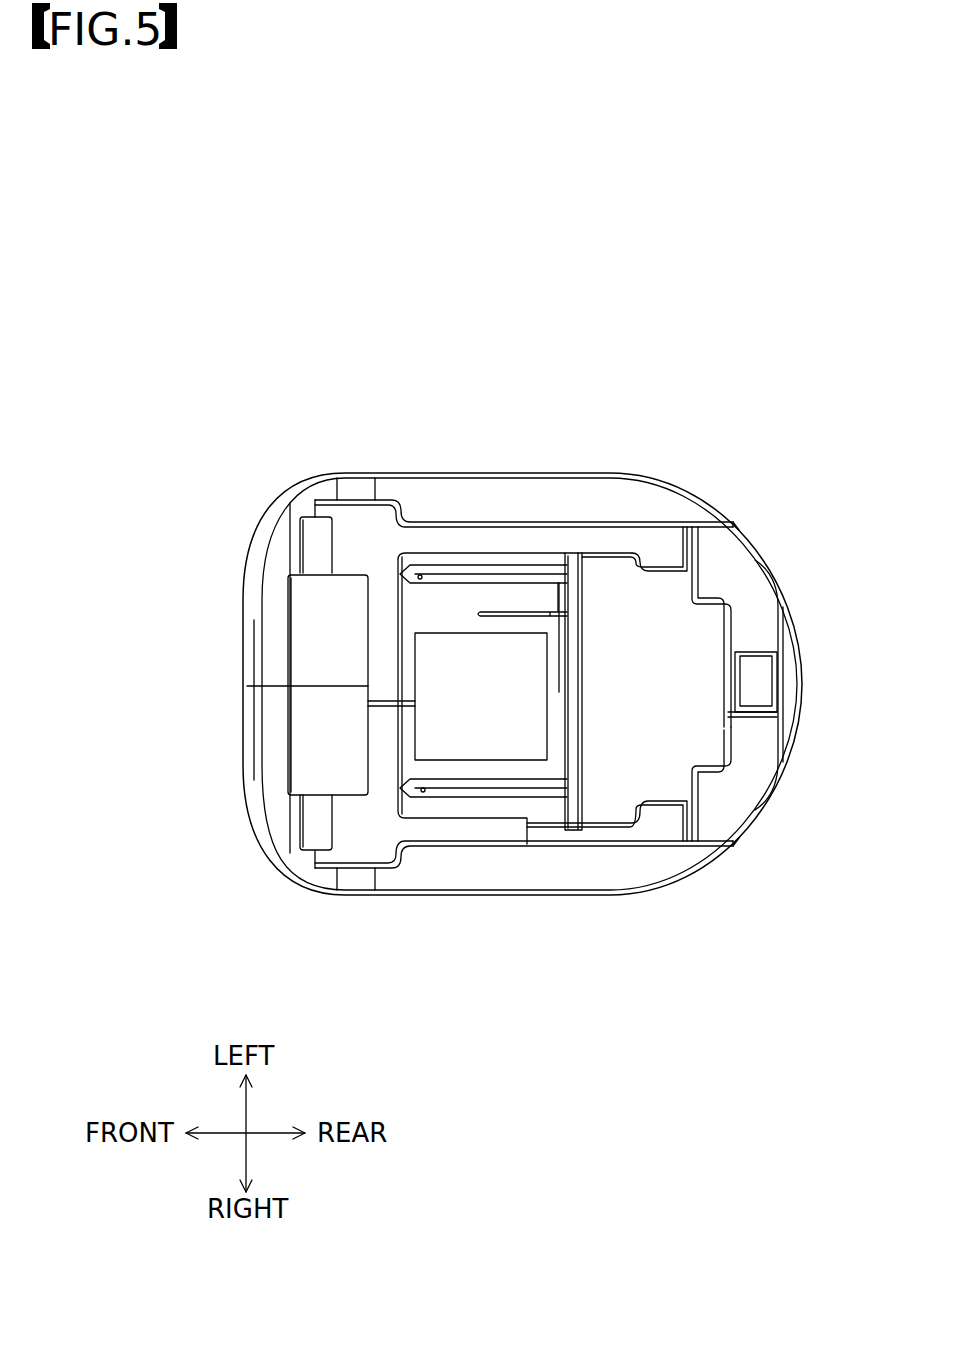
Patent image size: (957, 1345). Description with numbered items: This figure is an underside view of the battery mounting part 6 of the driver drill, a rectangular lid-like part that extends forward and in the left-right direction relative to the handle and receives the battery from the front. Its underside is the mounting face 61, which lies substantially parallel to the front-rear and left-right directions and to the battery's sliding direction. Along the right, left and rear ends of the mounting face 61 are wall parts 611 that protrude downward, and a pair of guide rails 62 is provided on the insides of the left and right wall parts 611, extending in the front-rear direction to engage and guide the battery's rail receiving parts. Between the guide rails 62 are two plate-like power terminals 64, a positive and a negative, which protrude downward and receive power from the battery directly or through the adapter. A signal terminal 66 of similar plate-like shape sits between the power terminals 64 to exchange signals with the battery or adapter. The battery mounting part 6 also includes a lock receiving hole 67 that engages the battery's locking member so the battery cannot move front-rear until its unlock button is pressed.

The battery mounting part 6 is at (737, 375).
The wall parts 611 is at (643, 487).
The guide rails 62 is at (510, 522).
The power terminals 64 is at (457, 575).
The signal terminal 66 is at (483, 612).
The lock receiving hole 67 is at (305, 688).
The mounting face 61 is at (582, 697).